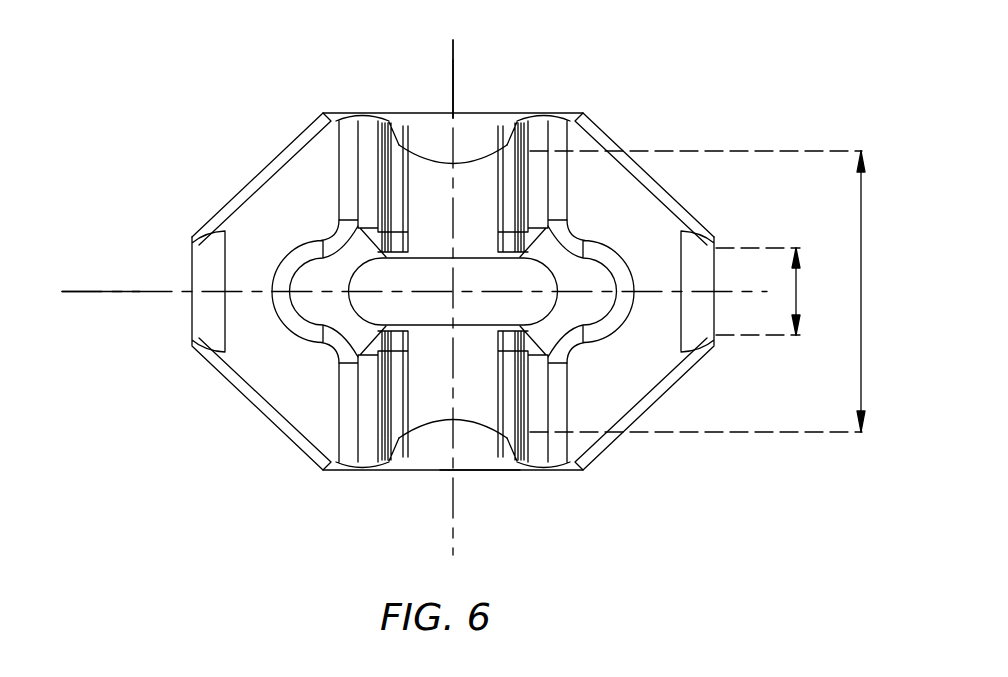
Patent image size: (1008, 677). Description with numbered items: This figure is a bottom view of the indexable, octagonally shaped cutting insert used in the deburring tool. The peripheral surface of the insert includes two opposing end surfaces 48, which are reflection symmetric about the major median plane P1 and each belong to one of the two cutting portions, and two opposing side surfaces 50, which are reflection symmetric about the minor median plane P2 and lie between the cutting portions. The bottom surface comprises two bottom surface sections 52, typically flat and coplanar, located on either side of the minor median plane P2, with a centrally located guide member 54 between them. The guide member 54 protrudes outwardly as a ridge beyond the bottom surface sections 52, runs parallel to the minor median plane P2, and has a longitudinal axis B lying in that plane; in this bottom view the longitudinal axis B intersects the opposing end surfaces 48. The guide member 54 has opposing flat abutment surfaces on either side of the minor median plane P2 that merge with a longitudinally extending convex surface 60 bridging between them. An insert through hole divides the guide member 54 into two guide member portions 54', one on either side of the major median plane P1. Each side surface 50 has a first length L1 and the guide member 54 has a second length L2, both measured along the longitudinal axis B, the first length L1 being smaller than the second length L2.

The end surface 48 is at (424, 130).
The side surface 50 is at (200, 312).
The bottom surface section 52 is at (282, 366).
The guide member 54 is at (558, 248).
The guide member portion 54' is at (312, 317).
The convex surface 60 is at (490, 446).
The major median plane P1 is at (100, 290).
The minor median plane P2 is at (453, 77).
The longitudinal axis B is at (452, 58).
The first length L1 is at (777, 291).
The second length L2 is at (717, 291).